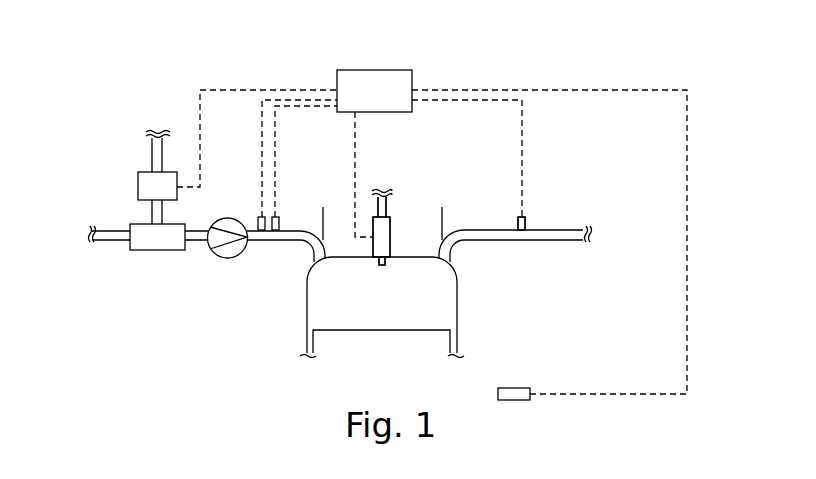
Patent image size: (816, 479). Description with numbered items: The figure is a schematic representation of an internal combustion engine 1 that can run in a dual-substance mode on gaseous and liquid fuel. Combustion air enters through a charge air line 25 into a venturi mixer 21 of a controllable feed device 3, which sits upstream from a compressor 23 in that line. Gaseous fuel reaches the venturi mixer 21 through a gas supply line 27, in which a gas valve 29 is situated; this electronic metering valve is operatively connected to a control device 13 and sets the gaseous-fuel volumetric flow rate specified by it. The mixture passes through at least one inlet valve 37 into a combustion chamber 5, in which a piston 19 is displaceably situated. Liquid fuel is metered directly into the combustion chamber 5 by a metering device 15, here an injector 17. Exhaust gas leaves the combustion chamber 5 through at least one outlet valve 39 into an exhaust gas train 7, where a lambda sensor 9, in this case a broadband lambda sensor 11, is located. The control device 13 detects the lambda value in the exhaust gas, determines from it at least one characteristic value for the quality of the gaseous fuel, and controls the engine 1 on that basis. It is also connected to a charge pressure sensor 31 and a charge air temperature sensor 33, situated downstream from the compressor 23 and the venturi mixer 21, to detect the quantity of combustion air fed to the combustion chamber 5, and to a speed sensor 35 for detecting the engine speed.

The internal combustion engine 1 is at (484, 46).
The controllable feed device 3 is at (102, 154).
The combustion chamber 5 is at (375, 304).
The exhaust gas train 7 is at (575, 243).
The lambda sensor 9 is at (527, 222).
The broadband lambda sensor 11 is at (527, 222).
The control device 13 is at (373, 70).
The metering device 15 is at (397, 220).
The injector 17 is at (397, 220).
The piston 19 is at (369, 354).
The venturi mixer 21 is at (160, 251).
The compressor 23 is at (228, 259).
The charge air line 25 is at (114, 258).
The gas supply line 27 is at (174, 215).
The gas valve 29 is at (145, 172).
The charge pressure sensor 31 is at (259, 217).
The charge air temperature sensor 33 is at (276, 217).
The speed sensor 35 is at (513, 401).
The inlet valve 37 is at (323, 207).
The outlet valve 39 is at (445, 212).